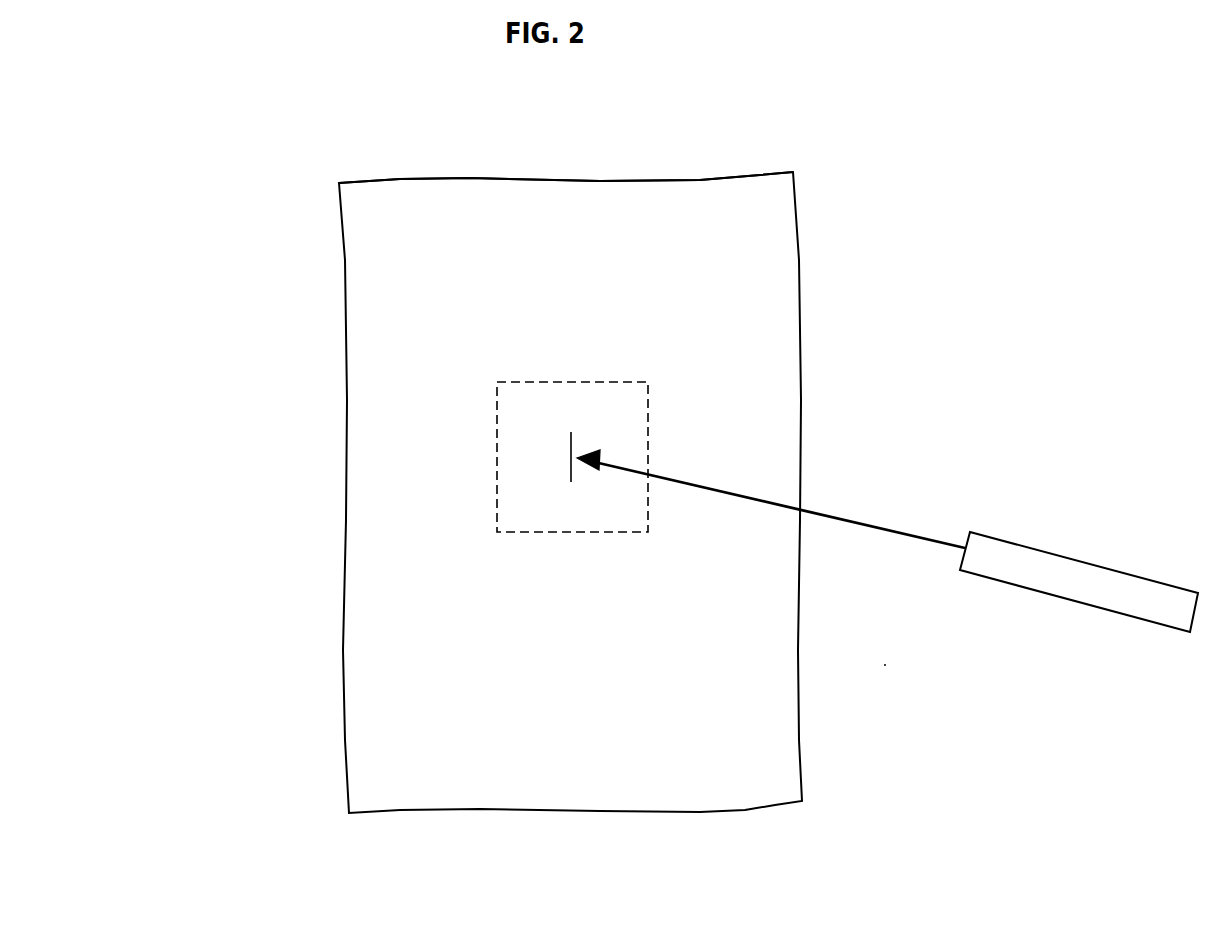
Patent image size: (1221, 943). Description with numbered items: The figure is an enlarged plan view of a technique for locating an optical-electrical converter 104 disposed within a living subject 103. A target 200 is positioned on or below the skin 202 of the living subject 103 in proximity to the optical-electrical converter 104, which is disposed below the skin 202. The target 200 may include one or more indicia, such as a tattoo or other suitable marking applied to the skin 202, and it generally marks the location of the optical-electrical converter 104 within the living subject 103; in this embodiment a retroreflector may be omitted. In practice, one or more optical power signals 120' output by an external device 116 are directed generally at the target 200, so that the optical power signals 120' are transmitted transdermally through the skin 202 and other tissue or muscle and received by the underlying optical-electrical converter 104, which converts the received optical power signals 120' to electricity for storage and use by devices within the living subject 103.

The living subject 103 is at (610, 183).
The skin 202 is at (780, 247).
The optical-electrical converter 104 is at (610, 415).
The target 200 is at (570, 456).
The optical power signals 120' is at (776, 497).
The external device 116 is at (1050, 548).